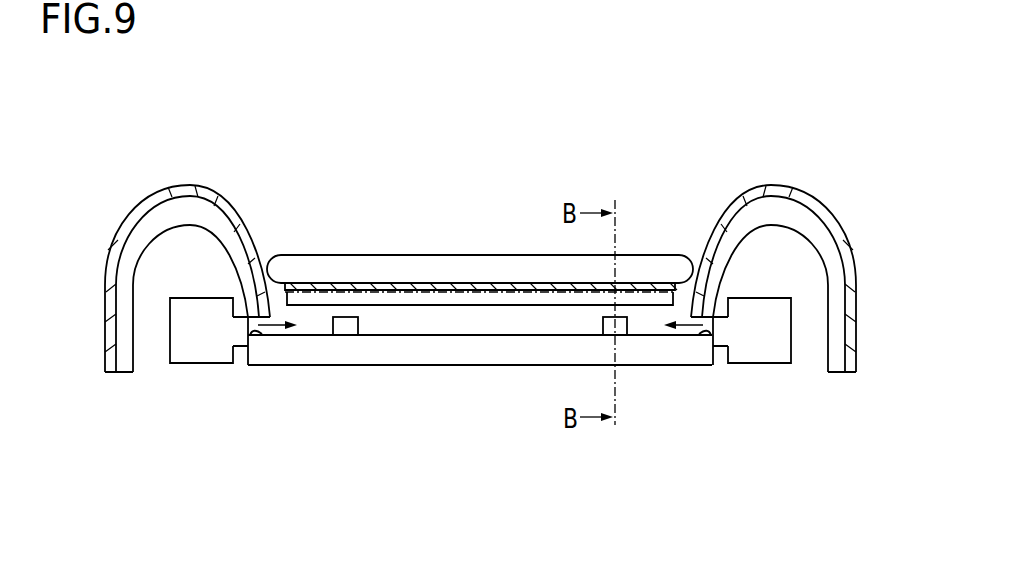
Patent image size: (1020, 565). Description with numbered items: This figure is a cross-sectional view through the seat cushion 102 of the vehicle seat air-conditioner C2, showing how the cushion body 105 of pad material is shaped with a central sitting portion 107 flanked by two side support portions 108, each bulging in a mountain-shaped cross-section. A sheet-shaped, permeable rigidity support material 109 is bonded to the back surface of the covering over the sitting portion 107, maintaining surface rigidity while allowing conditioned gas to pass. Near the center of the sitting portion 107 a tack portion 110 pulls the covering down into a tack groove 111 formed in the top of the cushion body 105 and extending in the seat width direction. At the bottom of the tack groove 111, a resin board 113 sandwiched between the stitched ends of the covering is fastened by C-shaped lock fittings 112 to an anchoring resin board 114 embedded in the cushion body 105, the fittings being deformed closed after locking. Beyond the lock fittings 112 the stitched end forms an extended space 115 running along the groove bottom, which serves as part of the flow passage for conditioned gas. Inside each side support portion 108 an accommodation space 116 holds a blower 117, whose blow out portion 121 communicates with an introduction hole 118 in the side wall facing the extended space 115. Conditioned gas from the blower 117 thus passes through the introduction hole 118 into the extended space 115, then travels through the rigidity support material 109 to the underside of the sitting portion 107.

The vehicle seat air-conditioner C2 is at (346, 161).
The seat cushion 102 is at (700, 153).
The cushion body 105 is at (403, 365).
The sitting portion 107 is at (433, 255).
The side support portion 108 is at (116, 210).
The rigidity support material 109 is at (385, 287).
The tack portion 110 is at (487, 262).
The tack groove 111 is at (535, 333).
The lock fitting 112 is at (346, 317).
The resin board 113 is at (612, 303).
The anchoring resin board 114 is at (350, 335).
The extended space 115 is at (447, 327).
The accommodation space 116 is at (148, 292).
The blower 117 is at (193, 355).
The introduction hole 118 is at (250, 345).
The blow out portion 121 is at (242, 340).